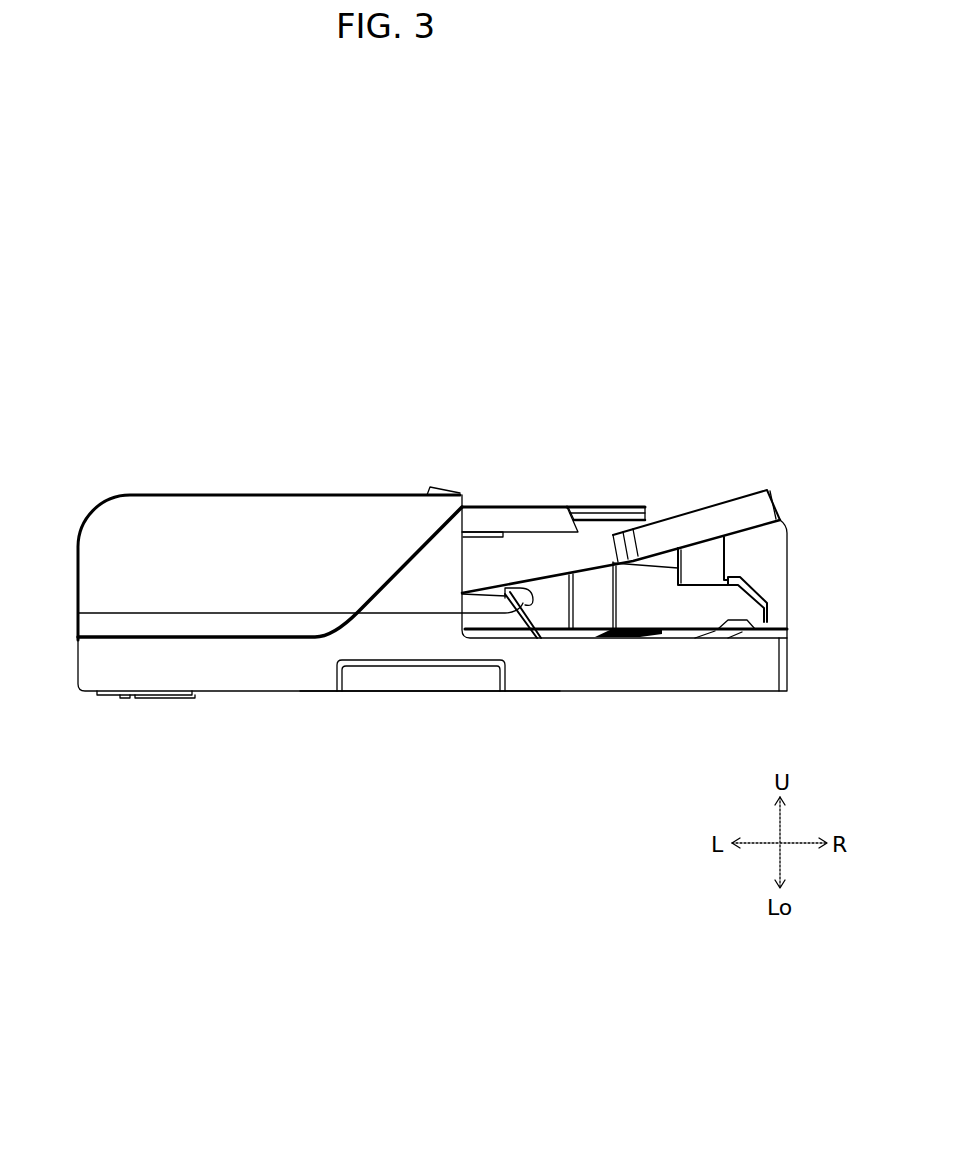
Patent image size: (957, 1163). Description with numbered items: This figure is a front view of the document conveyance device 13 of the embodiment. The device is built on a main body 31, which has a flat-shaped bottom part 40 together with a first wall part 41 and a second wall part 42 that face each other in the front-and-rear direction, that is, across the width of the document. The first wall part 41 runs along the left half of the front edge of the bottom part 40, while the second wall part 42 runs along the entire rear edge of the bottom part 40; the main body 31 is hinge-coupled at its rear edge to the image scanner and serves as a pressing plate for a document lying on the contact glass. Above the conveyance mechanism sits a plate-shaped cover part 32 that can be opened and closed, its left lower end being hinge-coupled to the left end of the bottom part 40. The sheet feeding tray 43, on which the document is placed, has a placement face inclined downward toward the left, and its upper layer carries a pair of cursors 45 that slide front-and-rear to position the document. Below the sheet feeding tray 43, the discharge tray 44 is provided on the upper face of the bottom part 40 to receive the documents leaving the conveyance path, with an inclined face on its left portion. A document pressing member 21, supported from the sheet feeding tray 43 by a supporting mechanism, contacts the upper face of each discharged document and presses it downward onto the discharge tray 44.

The document conveyance device 13 is at (117, 406).
The cover part 32 is at (182, 495).
The bottom part 40 is at (307, 692).
The main body 31 is at (422, 706).
The first wall part 41 is at (400, 620).
The cursors 45 is at (550, 507).
The second wall part 42 is at (656, 507).
The sheet feeding tray 43 is at (745, 490).
The discharge tray 44 is at (773, 625).
The document pressing member 21 is at (522, 618).